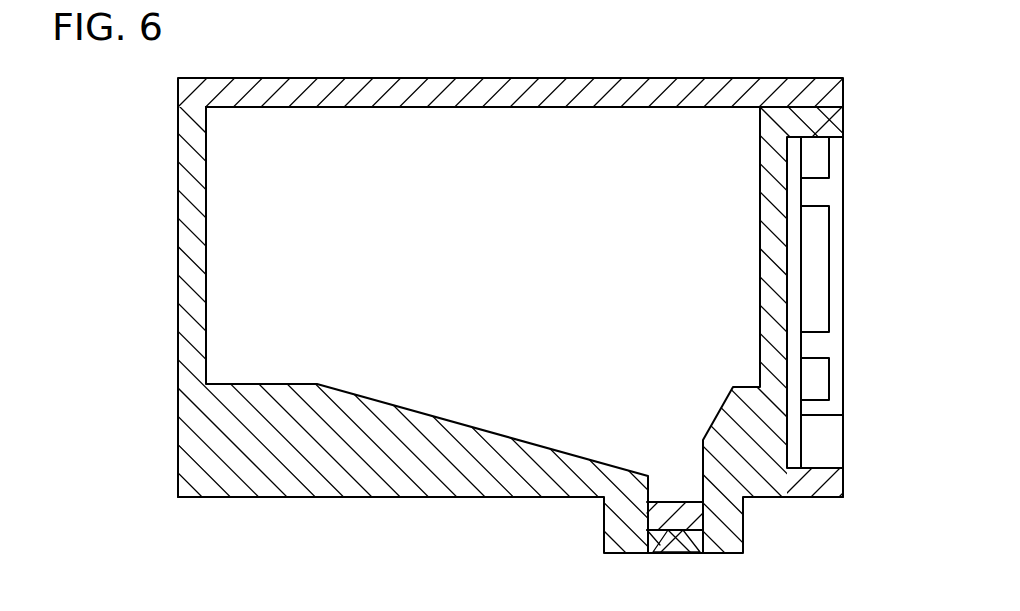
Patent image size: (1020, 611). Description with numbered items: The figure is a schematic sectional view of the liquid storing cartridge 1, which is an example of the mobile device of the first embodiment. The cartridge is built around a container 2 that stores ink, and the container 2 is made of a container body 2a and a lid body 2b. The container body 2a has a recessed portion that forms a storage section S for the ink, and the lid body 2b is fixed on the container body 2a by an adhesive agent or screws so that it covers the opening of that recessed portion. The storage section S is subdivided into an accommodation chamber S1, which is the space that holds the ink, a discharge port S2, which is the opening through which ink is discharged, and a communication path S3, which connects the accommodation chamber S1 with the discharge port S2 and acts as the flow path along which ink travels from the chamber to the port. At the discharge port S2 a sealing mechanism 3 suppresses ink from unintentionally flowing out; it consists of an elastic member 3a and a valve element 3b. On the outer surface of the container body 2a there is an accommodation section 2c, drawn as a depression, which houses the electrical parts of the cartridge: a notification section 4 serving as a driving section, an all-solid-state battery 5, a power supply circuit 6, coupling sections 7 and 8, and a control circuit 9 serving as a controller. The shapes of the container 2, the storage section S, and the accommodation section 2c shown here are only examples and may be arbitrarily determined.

The liquid storing cartridge 1 is at (870, 113).
The container 2 is at (95, 67).
The container body 2a is at (182, 132).
The lid body 2b is at (182, 88).
The accommodation section 2c is at (830, 190).
The sealing mechanism 3 is at (828, 508).
The elastic member 3a is at (697, 545).
The valve element 3b is at (678, 513).
The notification section 4 is at (818, 148).
The all-solid-state battery 5 is at (822, 218).
The power supply circuit 6 is at (815, 380).
The coupling section 7 is at (822, 436).
The coupling section 8 is at (822, 441).
The control circuit 9 is at (797, 288).
The storage section S is at (592, 549).
The accommodation chamber S1 is at (453, 307).
The discharge port S2 is at (675, 492).
The communication path S3 is at (580, 408).